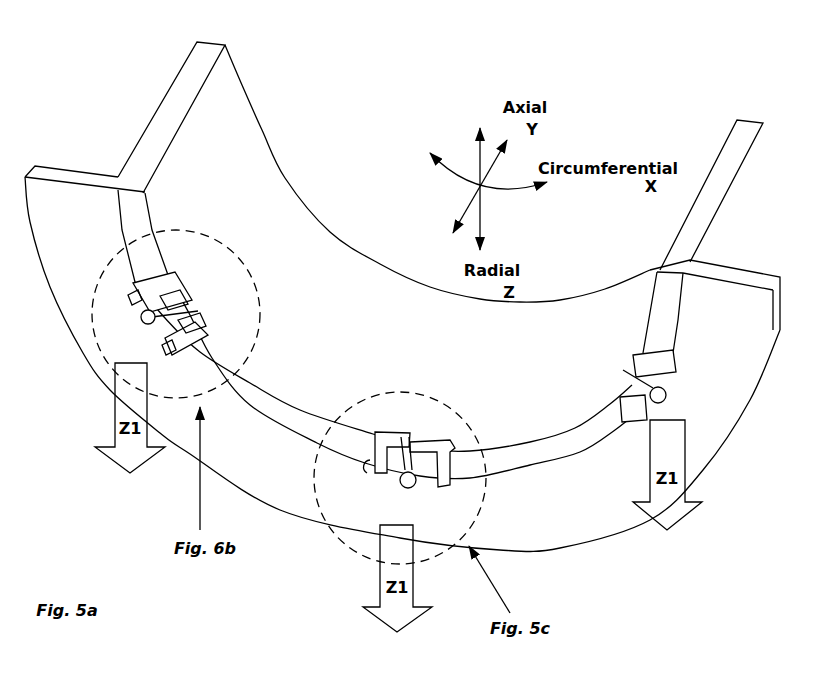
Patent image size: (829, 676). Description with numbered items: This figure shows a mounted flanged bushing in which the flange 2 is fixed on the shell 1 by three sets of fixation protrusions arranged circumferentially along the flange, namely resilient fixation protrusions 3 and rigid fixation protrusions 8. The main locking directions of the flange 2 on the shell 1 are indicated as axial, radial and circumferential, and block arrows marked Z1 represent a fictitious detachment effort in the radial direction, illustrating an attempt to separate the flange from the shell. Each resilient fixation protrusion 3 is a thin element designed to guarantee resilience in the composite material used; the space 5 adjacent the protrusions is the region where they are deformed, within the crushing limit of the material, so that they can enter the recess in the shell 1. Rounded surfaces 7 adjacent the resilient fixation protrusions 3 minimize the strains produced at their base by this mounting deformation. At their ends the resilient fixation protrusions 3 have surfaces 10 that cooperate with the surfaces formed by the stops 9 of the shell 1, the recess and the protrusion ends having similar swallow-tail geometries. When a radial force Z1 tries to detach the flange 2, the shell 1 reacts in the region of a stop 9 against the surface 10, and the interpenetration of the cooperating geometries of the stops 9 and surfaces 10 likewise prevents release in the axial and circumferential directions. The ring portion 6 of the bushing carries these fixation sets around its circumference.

The shell 1 is at (176, 90).
The flange 2 is at (63, 166).
The resilient fixation protrusion 3 is at (164, 296).
The space 5 is at (406, 459).
The ring 6 is at (553, 447).
The rounded surface 7 is at (164, 347).
The rigid fixation protrusion 8 is at (623, 386).
The stop 9 is at (164, 268).
The surface 10 is at (432, 440).